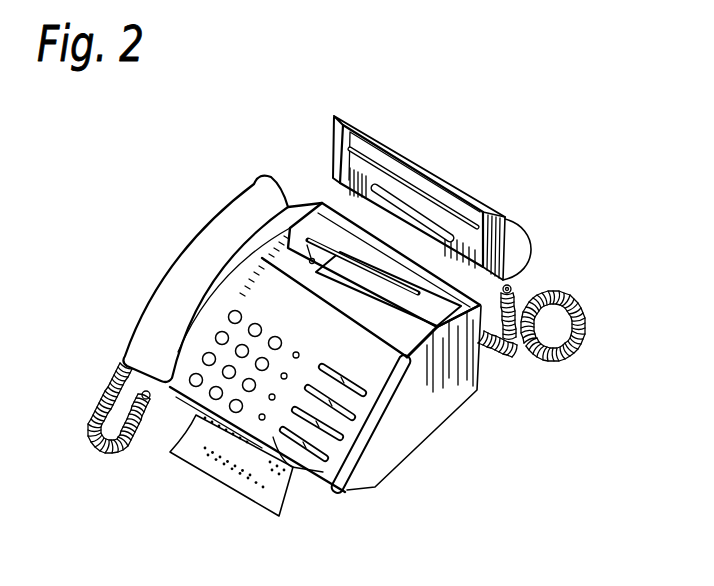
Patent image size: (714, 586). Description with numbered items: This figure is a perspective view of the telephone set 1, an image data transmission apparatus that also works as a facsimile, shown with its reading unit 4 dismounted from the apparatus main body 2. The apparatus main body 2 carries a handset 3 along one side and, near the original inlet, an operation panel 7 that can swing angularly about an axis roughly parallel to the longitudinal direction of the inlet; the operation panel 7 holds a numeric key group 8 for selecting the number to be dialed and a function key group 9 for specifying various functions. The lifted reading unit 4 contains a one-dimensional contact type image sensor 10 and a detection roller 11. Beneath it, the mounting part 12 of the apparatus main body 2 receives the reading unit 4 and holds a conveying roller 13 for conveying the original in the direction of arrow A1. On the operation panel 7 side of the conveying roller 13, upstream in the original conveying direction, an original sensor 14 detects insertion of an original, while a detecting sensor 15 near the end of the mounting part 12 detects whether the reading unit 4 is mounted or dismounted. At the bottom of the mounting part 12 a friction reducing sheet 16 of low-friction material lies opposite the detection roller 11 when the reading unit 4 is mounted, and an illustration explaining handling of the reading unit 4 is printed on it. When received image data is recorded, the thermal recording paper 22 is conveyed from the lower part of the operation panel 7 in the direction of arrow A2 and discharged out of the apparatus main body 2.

The telephone set 1 is at (530, 148).
The apparatus main body 2 is at (413, 410).
The handset 3 is at (157, 320).
The reading unit 4 is at (423, 173).
The operation panel 7 is at (227, 268).
The numeric key group 8 is at (194, 455).
The function key group 9 is at (292, 470).
The one-dimensional contact type image sensor 10 is at (370, 156).
The detection roller 11 is at (428, 216).
The mounting part 12 is at (320, 230).
The conveying roller 13 is at (434, 328).
The original sensor 14 is at (290, 228).
The detecting sensor 15 is at (478, 330).
The friction reducing sheet 16 is at (482, 262).
The thermal recording paper 22 is at (250, 488).
The original conveying direction A1 is at (355, 288).
The recording paper discharge direction A2 is at (193, 490).